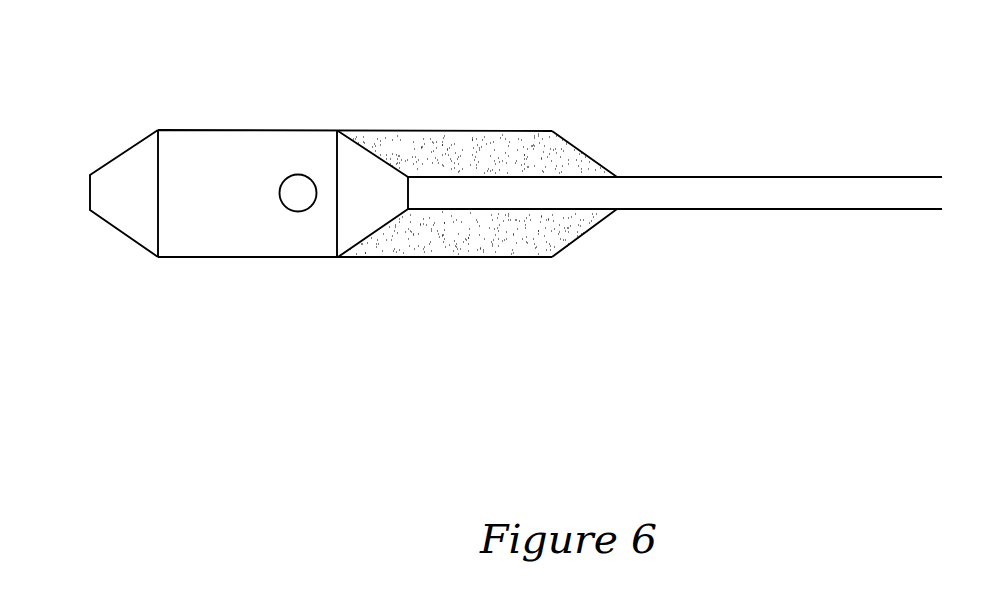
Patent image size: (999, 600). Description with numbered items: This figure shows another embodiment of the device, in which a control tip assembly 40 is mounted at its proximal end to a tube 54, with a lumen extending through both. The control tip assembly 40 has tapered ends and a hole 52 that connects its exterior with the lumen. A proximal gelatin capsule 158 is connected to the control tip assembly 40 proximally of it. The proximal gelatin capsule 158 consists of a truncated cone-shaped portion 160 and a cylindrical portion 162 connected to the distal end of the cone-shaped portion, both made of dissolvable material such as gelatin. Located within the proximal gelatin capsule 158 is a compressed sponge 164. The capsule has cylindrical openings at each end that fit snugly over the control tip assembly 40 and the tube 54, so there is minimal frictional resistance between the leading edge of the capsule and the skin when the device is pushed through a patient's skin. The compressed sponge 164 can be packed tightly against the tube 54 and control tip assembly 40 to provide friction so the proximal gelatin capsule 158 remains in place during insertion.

The control tip assembly 40 is at (151, 92).
The hole 52 is at (292, 212).
The tube 54 is at (800, 177).
The proximal gelatin capsule 158 is at (405, 90).
The truncated cone-shaped portion 160 is at (587, 155).
The cylindrical portion 162 is at (467, 257).
The compressed sponge 164 is at (490, 153).